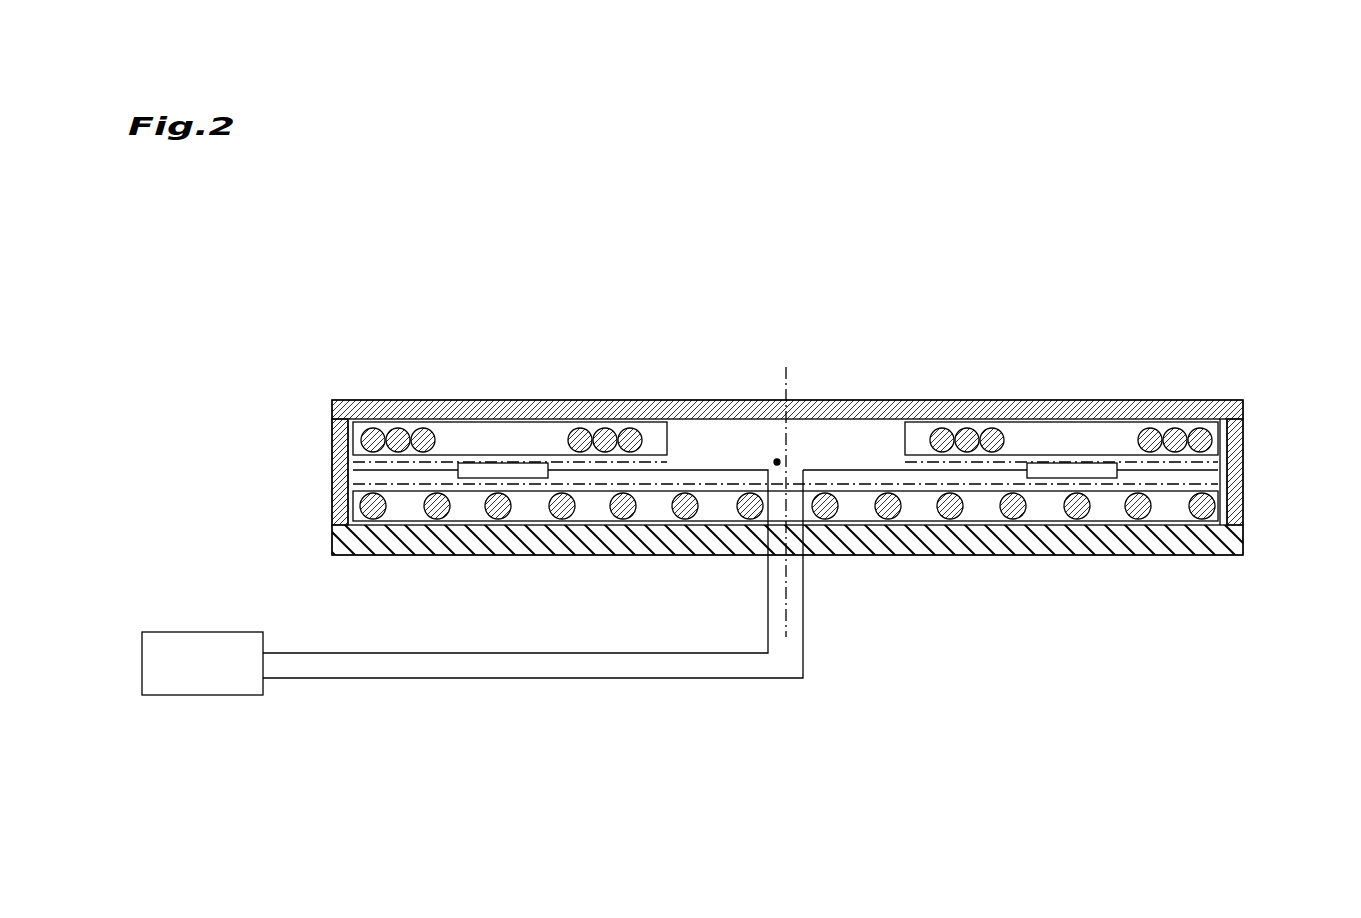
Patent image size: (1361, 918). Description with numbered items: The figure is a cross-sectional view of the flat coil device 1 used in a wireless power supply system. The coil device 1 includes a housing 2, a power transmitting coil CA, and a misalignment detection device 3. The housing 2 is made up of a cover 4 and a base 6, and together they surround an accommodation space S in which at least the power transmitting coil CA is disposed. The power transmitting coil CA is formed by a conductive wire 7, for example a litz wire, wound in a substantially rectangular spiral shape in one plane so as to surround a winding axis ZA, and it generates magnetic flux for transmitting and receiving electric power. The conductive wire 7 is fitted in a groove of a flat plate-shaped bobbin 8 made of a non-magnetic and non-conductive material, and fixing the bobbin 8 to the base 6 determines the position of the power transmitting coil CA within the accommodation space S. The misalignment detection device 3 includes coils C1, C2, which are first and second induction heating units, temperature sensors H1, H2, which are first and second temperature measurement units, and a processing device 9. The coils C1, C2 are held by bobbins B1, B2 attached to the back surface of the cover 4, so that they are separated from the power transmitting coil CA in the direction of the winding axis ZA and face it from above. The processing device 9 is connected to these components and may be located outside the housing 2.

The coil device 1 is at (1088, 254).
The housing 2 is at (1310, 440).
The misalignment detection device 3 is at (348, 438).
The cover 4 is at (1243, 434).
The base 6 is at (1243, 540).
The conductive wire 7 is at (385, 503).
The bobbin 8 is at (348, 497).
The processing device 9 is at (210, 632).
The bobbin B1 is at (338, 400).
The bobbin B2 is at (1237, 400).
The coil C1 is at (478, 418).
The coil C2 is at (1090, 418).
The temperature sensor H1 is at (522, 460).
The temperature sensor H2 is at (1065, 460).
The accommodation space S is at (777, 460).
The winding axis ZA is at (786, 372).
The power transmitting coil CA is at (597, 520).